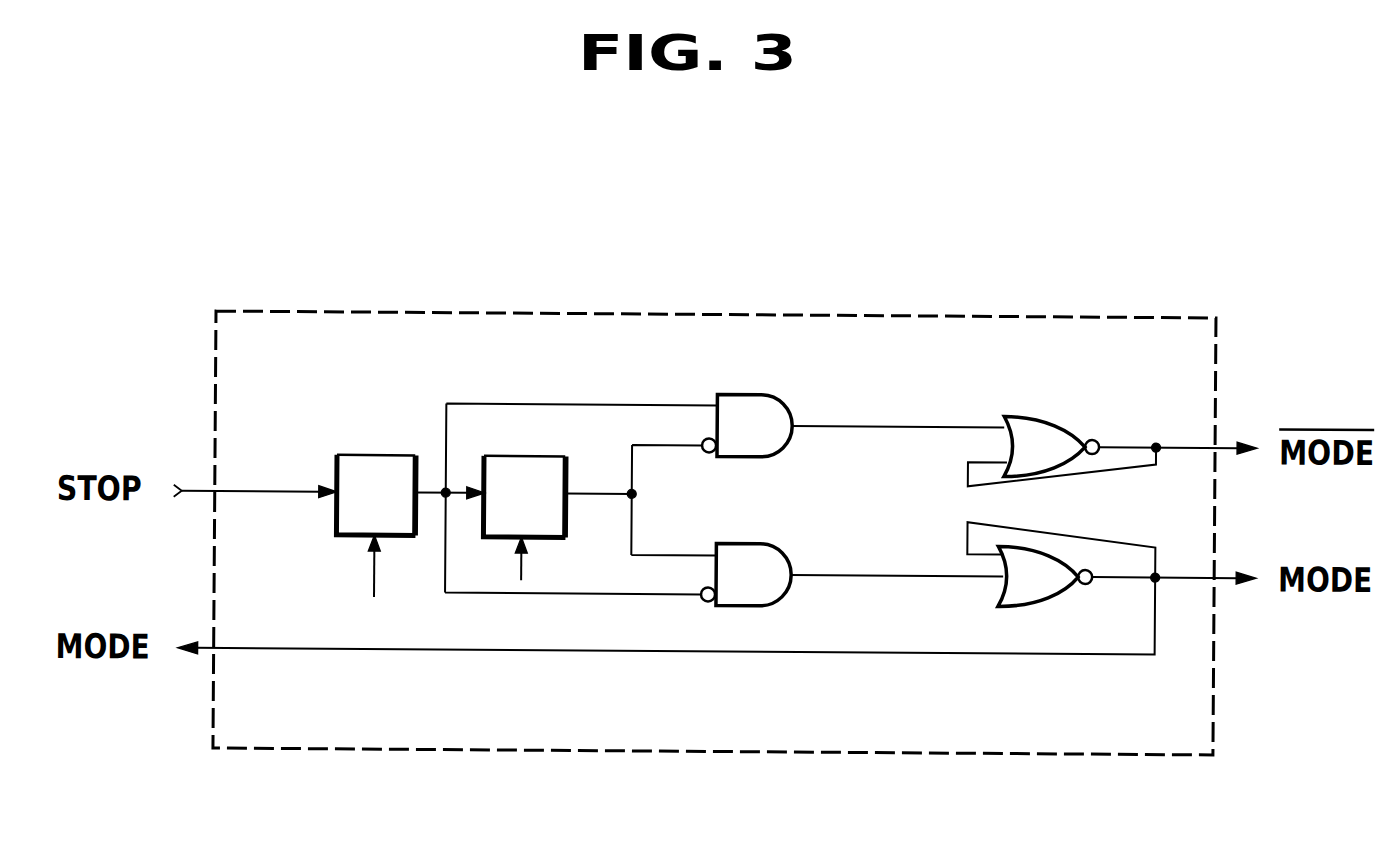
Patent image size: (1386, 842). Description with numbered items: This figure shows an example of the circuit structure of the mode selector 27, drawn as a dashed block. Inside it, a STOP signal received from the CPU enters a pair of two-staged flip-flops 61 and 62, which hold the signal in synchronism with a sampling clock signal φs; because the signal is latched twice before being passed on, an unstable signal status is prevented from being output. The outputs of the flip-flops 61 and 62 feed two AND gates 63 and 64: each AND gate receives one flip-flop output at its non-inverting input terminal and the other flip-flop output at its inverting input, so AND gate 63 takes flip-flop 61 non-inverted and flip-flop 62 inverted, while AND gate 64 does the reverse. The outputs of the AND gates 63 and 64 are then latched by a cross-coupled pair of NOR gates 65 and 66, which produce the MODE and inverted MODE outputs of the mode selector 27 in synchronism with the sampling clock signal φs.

The mode selector 27 is at (686, 311).
The flip-flop 61 is at (347, 454).
The flip-flop 62 is at (600, 449).
The AND gate 63 is at (775, 391).
The AND gate 64 is at (770, 540).
The NOR gate 65 is at (1055, 411).
The NOR gate 66 is at (1050, 601).